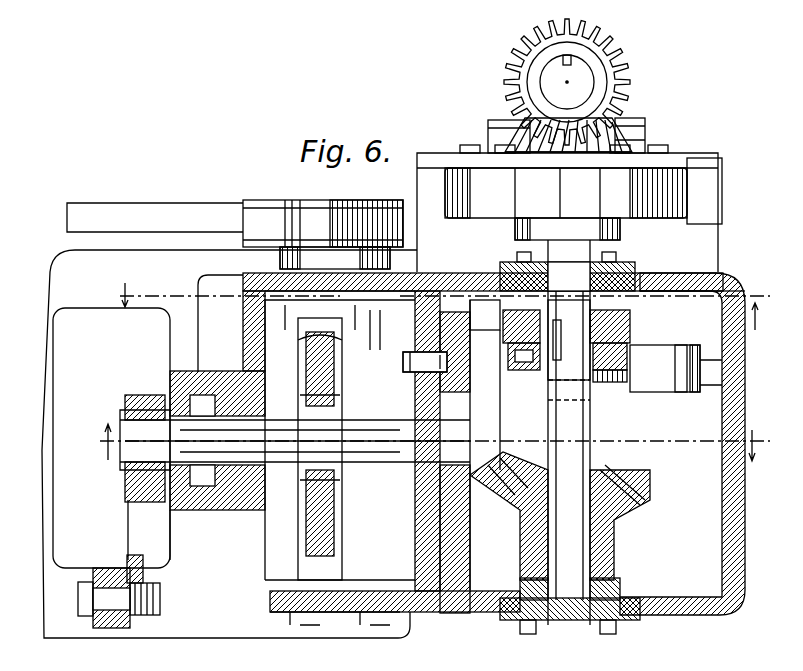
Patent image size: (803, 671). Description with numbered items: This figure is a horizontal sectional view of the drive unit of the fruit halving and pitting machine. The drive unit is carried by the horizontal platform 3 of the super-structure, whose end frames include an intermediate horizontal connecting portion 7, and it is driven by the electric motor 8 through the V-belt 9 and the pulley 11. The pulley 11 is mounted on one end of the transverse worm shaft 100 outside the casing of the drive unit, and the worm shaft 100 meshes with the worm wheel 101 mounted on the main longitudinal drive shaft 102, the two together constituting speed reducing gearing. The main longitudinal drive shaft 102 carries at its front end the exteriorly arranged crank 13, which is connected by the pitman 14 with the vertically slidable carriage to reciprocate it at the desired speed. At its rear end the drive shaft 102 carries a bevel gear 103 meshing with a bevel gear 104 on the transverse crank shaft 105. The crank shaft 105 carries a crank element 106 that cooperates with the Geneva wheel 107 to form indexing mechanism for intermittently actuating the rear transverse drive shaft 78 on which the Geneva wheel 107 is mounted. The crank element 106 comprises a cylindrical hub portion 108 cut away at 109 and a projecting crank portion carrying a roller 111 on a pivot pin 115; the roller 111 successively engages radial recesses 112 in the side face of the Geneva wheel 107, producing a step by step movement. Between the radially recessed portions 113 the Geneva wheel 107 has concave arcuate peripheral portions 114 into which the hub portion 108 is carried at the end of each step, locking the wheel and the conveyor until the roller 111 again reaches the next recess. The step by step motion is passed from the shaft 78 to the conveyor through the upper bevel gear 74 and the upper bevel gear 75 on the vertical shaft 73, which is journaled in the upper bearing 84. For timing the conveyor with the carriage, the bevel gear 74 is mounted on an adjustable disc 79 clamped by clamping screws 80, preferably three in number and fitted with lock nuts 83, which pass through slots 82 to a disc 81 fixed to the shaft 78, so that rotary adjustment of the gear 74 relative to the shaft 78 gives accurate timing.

The horizontal platform 3 is at (43, 603).
The horizontal connecting portion 7 is at (430, 442).
The electric motor 8 is at (438, 306).
The V-belt 9 is at (67, 231).
The pulley 11 is at (247, 200).
The crank 13 is at (128, 528).
The pitman 14 is at (108, 630).
The vertical shaft 73 is at (618, 75).
The upper bevel gear 74 is at (645, 130).
The upper bevel gear 75 is at (592, 90).
The horizontal shaft 78 is at (595, 247).
The adjustable disc 79 is at (675, 168).
The clamping screws 80 is at (470, 150).
The disc 81 is at (700, 218).
The slots 82 is at (567, 212).
The lock nuts 83 is at (505, 155).
The upper bearing 84 is at (500, 125).
The worm shaft 100 is at (338, 218).
The worm wheel 101 is at (330, 585).
The main longitudinal drive shaft 102 is at (128, 455).
The bevel gear 103 is at (470, 490).
The bevel gear 104 is at (620, 490).
The transverse crank shaft 105 is at (620, 478).
The crank element 106 is at (640, 330).
The Geneva wheel 107 is at (669, 381).
The cylindrical hub portion 108 is at (628, 366).
The cut away portion 109 is at (628, 381).
The roller 111 is at (569, 403).
The radial recesses 112 is at (683, 345).
The radially recessed portions 113 is at (700, 383).
The concave arcuate peripheral portions 114 is at (625, 375).
The pivot pin 115 is at (569, 345).